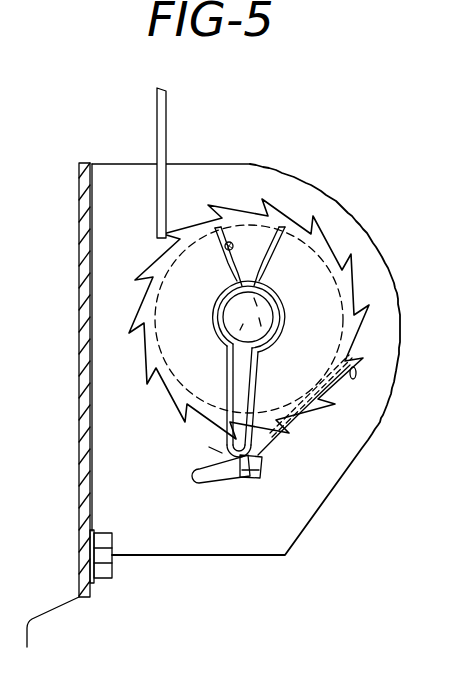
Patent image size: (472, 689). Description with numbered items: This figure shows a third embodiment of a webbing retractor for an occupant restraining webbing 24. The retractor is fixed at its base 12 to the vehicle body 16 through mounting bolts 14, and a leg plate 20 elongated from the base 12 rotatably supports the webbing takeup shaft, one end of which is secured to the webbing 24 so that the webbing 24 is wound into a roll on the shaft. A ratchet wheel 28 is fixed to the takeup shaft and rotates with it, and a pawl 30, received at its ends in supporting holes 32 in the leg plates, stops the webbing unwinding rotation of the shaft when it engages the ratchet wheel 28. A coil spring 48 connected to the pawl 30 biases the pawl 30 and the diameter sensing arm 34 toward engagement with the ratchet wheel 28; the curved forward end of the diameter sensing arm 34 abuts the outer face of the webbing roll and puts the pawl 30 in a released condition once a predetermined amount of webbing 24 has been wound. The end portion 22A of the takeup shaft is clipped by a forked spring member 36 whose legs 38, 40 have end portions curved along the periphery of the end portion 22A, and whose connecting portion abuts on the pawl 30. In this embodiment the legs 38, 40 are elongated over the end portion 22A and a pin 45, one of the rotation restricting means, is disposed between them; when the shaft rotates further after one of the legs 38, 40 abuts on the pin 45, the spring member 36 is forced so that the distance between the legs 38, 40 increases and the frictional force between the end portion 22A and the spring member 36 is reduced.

The base 12 is at (85, 598).
The mounting bolts 14 is at (112, 576).
The vehicle body 16 is at (58, 357).
The leg plate 20 is at (370, 230).
The end portion of the takeup shaft 22A is at (262, 307).
The occupant restraining webbing 24 is at (168, 112).
The ratchet wheels 28 is at (355, 295).
The pawl 30 is at (262, 460).
The supporting holes 32 is at (234, 485).
The diameter sensing arm 34 is at (356, 374).
The spring member 36 is at (229, 380).
The leg 38 is at (220, 303).
The leg 40 is at (280, 322).
The pin 45 is at (231, 248).
The coil spring 48 is at (246, 480).